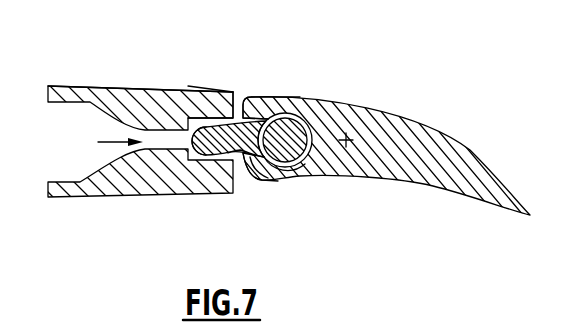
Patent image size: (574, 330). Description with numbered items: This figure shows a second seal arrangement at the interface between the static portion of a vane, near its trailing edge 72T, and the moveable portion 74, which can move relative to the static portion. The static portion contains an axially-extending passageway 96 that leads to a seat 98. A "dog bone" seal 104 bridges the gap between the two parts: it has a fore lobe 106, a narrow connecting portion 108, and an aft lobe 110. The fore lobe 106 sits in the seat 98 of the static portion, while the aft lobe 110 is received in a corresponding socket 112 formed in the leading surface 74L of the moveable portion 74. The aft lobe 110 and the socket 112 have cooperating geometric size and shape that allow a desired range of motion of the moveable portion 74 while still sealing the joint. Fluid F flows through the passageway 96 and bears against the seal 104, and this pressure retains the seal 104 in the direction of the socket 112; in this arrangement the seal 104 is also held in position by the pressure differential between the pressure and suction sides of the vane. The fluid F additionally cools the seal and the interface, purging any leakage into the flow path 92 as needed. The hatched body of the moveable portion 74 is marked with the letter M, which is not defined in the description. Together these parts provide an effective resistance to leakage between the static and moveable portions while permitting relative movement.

The flow path 92 is at (60, 155).
The axially-extending passageway 96 is at (170, 90).
The seat 98 is at (217, 91).
The trailing edge 72T is at (236, 91).
The narrow connecting portion 108 is at (258, 98).
The aft lobe 110 is at (312, 128).
The moveable portion 74 is at (428, 150).
The blade material M is at (348, 140).
The leading surface 74L is at (242, 178).
The socket 112 is at (300, 166).
The fore lobe 106 is at (197, 157).
The dog bone seal 104 is at (238, 162).
The fluid F is at (103, 141).